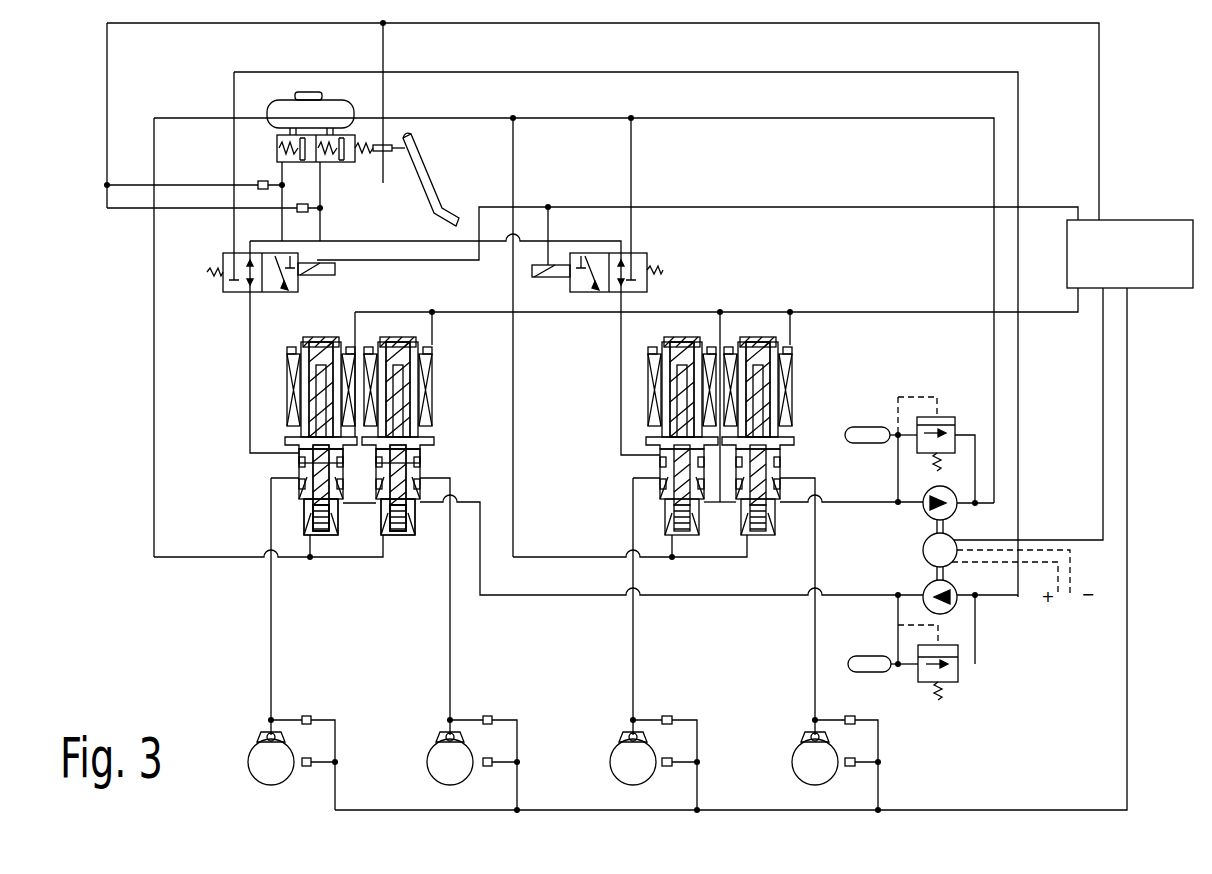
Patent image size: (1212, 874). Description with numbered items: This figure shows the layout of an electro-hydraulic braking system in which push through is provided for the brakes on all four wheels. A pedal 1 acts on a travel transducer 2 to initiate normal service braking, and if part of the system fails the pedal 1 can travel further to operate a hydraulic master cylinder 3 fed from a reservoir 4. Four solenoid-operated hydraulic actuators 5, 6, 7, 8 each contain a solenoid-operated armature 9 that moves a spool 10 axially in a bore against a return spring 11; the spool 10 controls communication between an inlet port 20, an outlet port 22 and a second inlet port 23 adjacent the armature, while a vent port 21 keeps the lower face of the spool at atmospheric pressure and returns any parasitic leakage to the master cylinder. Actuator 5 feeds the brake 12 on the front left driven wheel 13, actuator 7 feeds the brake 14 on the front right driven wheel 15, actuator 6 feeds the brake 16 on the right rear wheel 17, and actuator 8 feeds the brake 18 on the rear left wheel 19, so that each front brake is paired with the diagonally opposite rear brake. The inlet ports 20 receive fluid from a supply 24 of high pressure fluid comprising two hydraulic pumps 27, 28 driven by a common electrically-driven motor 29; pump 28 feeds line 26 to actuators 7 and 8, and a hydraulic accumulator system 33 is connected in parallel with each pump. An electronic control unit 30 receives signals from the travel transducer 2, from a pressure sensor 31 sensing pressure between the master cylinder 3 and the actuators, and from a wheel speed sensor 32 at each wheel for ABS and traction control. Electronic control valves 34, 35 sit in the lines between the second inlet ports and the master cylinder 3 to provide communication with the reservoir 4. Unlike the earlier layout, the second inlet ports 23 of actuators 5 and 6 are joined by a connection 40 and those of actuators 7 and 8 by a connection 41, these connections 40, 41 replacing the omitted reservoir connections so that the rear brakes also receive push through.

The pedal 1 is at (432, 189).
The travel transducer 2 is at (383, 178).
The hydraulic master cylinder 3 is at (277, 145).
The reservoir 4 is at (290, 100).
The solenoid-operated hydraulic actuator 5 is at (320, 340).
The solenoid-operated hydraulic actuator 6 is at (398, 345).
The solenoid-operated hydraulic actuator 7 is at (678, 345).
The solenoid-operated hydraulic actuator 8 is at (754, 345).
The solenoid-operated armature 9 is at (323, 397).
The spool 10 is at (325, 537).
The return spring 11 is at (310, 543).
The brake 12 is at (262, 735).
The front left driven wheel 13 is at (262, 780).
The brake 14 is at (627, 735).
The front right driven wheel 15 is at (615, 775).
The brake 16 is at (445, 735).
The right rear wheel 17 is at (437, 780).
The brake 18 is at (808, 735).
The rear left wheel 19 is at (805, 778).
The inlet port 20 is at (342, 507).
The vent port 21 is at (310, 538).
The outlet port 22 is at (300, 477).
The second inlet port 23 is at (302, 453).
The supply of high pressure fluid 24 is at (947, 558).
The line 26 is at (865, 500).
The hydraulic pump 27 is at (950, 605).
The hydraulic pump 28 is at (945, 500).
The electrically-driven motor 29 is at (958, 545).
The electronic control unit 30 is at (1178, 270).
The pressure sensor 31 is at (306, 714).
The wheel speed sensor 32 is at (307, 770).
The hydraulic accumulator system 33 is at (940, 420).
The electronic control valve 34 is at (238, 292).
The electronic control valve 35 is at (652, 287).
The connection 40 is at (365, 458).
The connection 41 is at (719, 530).